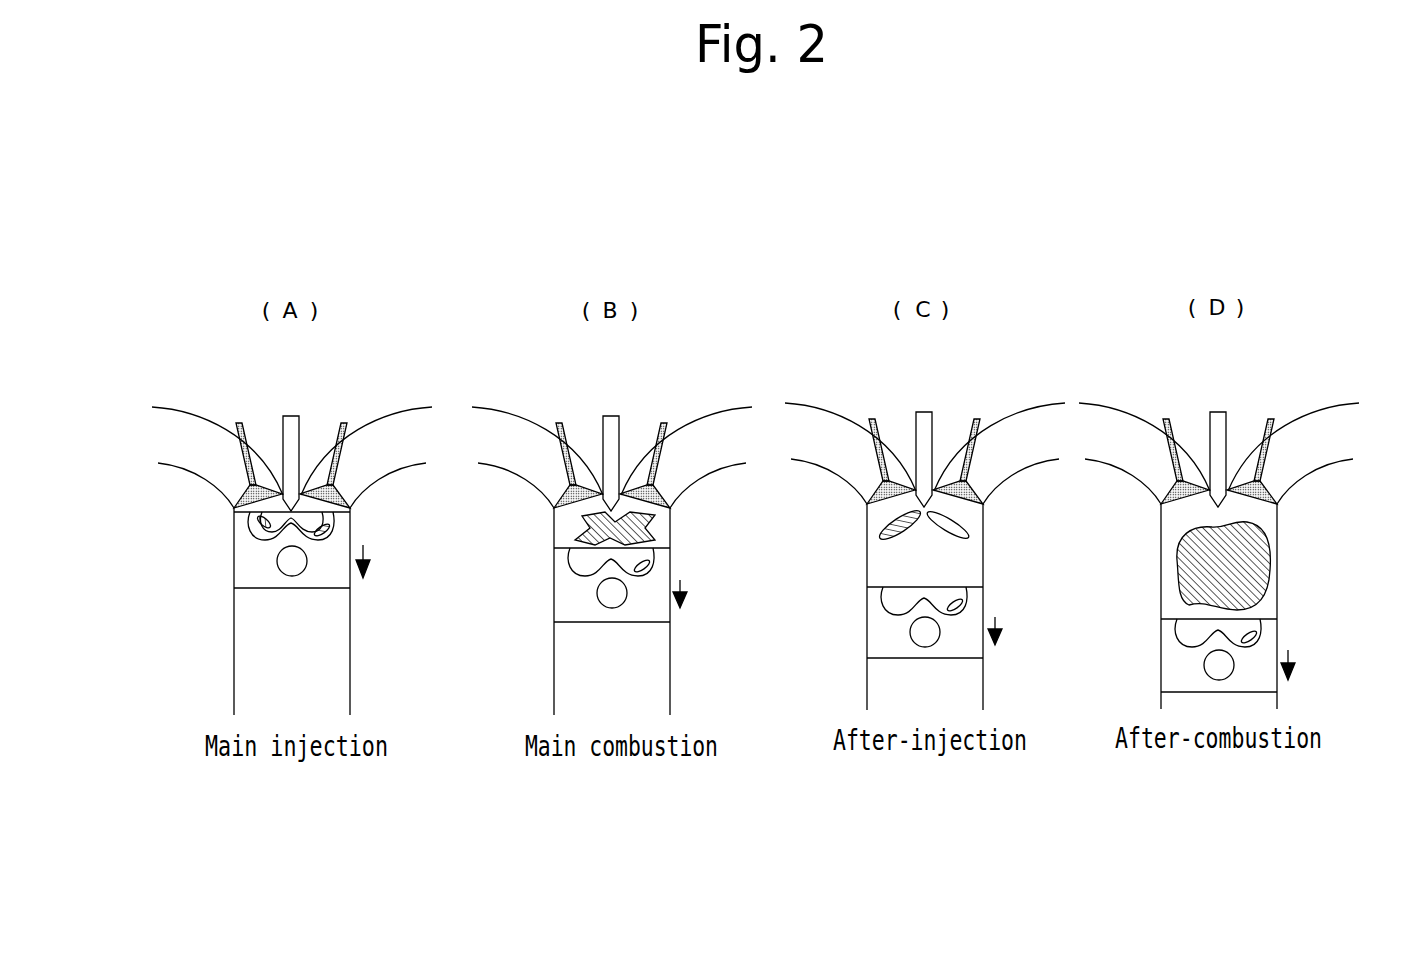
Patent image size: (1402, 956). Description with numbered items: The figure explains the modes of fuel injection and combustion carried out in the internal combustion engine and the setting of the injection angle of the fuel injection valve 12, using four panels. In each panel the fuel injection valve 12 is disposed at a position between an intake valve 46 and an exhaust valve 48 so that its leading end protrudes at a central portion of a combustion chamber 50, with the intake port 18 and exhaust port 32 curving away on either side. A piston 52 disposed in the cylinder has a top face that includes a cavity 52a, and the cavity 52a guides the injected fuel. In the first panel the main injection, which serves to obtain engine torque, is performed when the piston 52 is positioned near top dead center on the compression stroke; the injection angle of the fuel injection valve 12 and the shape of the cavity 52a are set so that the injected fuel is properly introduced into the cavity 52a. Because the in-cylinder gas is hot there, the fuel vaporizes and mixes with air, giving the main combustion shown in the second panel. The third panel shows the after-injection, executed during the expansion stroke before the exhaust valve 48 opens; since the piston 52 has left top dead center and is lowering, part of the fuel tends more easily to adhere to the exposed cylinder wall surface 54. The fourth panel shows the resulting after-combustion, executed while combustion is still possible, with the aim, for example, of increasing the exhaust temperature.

The fuel injection valve 12 is at (291, 414).
The intake port 18 is at (198, 466).
The exhaust port 32 is at (384, 466).
The intake valve 46 is at (238, 423).
The exhaust valve 48 is at (345, 423).
The combustion chamber 50 is at (249, 510).
The piston 52 is at (341, 577).
The cavity 52a is at (334, 532).
The exposed cylinder wall surface 54 is at (243, 578).